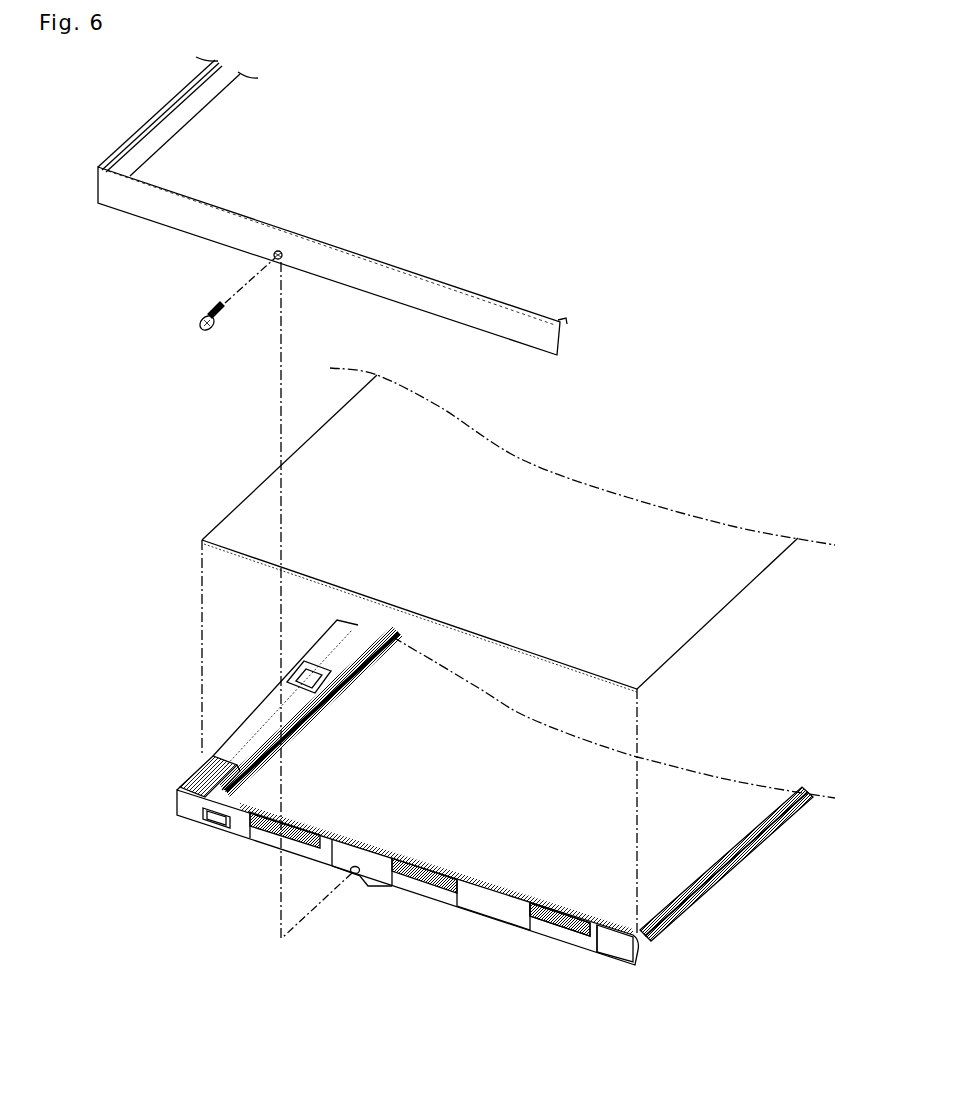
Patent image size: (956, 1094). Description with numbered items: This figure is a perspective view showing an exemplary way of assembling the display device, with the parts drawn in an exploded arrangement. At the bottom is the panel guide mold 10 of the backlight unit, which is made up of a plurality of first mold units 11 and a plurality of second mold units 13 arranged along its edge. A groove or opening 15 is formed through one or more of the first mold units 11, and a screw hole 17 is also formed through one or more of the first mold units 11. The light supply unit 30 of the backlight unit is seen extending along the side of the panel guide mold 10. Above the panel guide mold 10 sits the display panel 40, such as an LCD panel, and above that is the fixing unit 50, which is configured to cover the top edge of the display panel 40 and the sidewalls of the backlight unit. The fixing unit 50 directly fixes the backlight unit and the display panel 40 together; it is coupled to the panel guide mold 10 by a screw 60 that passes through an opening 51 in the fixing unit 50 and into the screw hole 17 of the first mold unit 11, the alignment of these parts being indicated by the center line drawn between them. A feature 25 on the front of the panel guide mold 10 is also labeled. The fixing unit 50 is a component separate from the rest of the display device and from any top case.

The panel guide mold 10 is at (555, 1020).
The first mold unit 11 is at (605, 945).
The second mold unit 13 is at (537, 932).
The groove or opening 15 is at (190, 824).
The screw hole 17 is at (350, 890).
The protrusion 25 is at (215, 828).
The light supply unit 30 is at (738, 825).
The display panel 40 is at (238, 507).
The fixing unit 50 is at (100, 183).
The screw hole 51 is at (262, 252).
The screw 60 is at (200, 324).